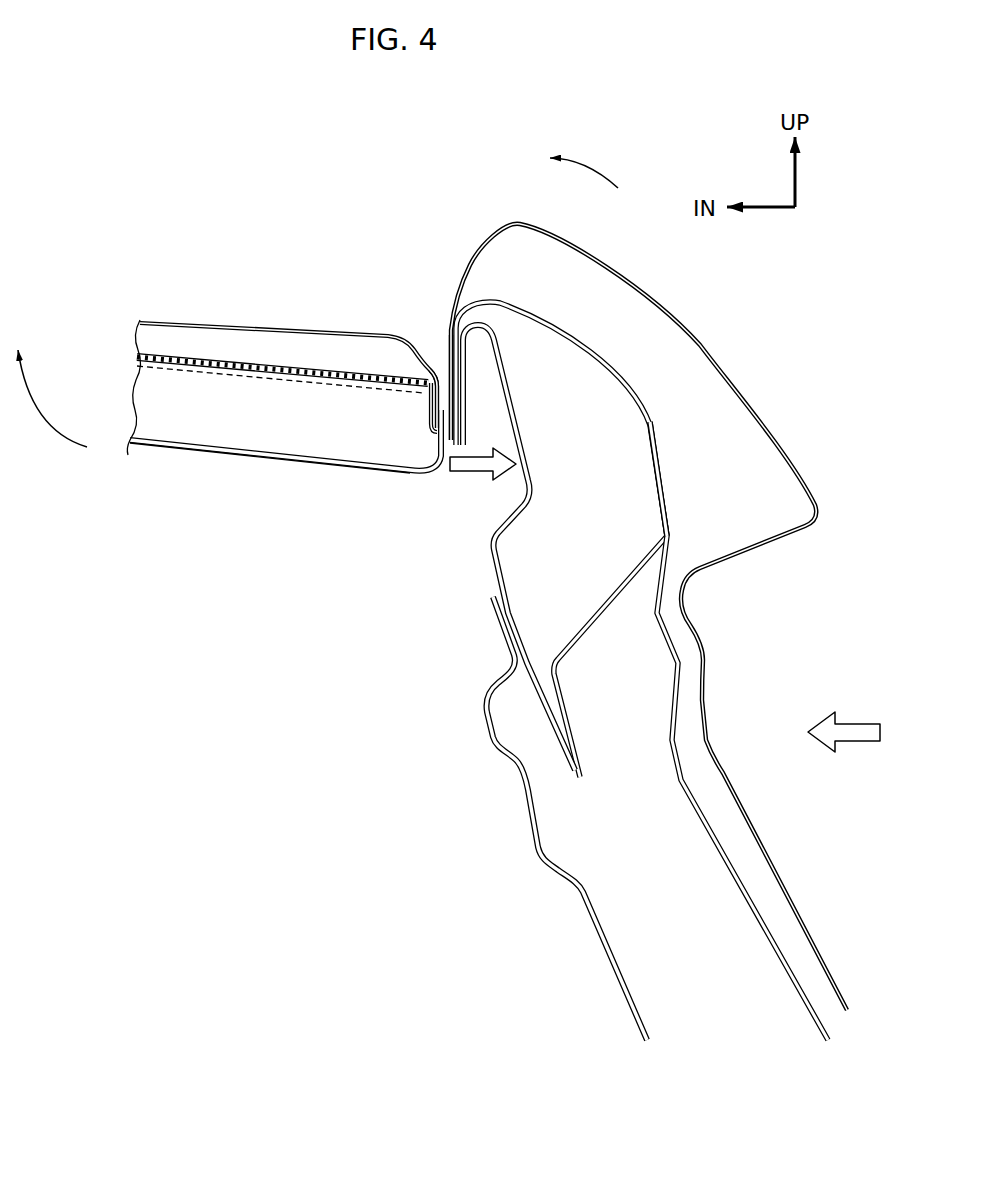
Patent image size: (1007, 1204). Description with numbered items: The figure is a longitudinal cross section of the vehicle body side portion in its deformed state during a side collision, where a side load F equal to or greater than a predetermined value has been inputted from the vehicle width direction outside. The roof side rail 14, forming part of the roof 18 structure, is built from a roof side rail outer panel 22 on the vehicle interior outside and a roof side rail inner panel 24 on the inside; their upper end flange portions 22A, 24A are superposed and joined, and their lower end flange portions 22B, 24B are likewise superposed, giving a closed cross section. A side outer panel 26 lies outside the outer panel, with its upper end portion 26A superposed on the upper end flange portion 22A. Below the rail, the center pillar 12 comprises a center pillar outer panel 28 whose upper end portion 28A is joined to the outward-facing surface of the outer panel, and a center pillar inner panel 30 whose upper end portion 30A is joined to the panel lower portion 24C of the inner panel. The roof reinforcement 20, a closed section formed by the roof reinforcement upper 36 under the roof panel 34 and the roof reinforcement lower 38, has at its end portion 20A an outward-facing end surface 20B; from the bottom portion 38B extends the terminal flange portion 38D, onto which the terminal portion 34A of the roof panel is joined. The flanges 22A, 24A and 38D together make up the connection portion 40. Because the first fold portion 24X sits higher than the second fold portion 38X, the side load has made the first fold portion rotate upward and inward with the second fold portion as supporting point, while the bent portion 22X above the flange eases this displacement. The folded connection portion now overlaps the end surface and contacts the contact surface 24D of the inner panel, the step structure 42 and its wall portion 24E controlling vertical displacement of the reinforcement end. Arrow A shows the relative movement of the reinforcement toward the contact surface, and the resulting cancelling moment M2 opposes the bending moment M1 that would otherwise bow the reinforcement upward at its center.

The center pillar 12 is at (722, 823).
The roof side rail 14 is at (569, 338).
The roof 18 is at (237, 250).
The roof reinforcement 20 is at (187, 455).
The longitudinal direction end portion 20A is at (397, 478).
The end surface 20B is at (426, 450).
The roof side rail outer panel 22 is at (608, 363).
The upper end flange portion 22A is at (466, 400).
The lower end flange portion 22B is at (563, 722).
The bent portion 22X is at (499, 310).
The roof side rail inner panel 24 is at (489, 564).
The upper end flange portion 24A is at (480, 380).
The lower end flange portion 24B is at (540, 735).
The panel lower portion 24C is at (498, 606).
The contact surface 24D is at (503, 434).
The wall portion 24E is at (511, 504).
The first fold portion 24X is at (481, 333).
The side outer panel 26 is at (702, 342).
The upper end portion 26A is at (448, 372).
The center pillar outer panel 28 is at (740, 858).
The upper end portion 28A is at (648, 458).
The center pillar inner panel 30 is at (583, 910).
The upper end portion 30A is at (507, 620).
The roof panel 34 is at (301, 333).
The terminal portion 34A is at (410, 352).
The roof reinforcement upper 36 is at (192, 357).
The roof reinforcement lower 38 is at (256, 464).
The bottom portion 38B is at (391, 469).
The terminal flange portion 38D is at (428, 395).
The second fold portion 38X is at (437, 478).
The connection portion 40 is at (470, 412).
The step structure 42 is at (462, 543).
The relative moving direction A is at (483, 492).
The load F is at (858, 710).
The bending moment M1 is at (33, 423).
The cancelling moment M2 is at (590, 160).